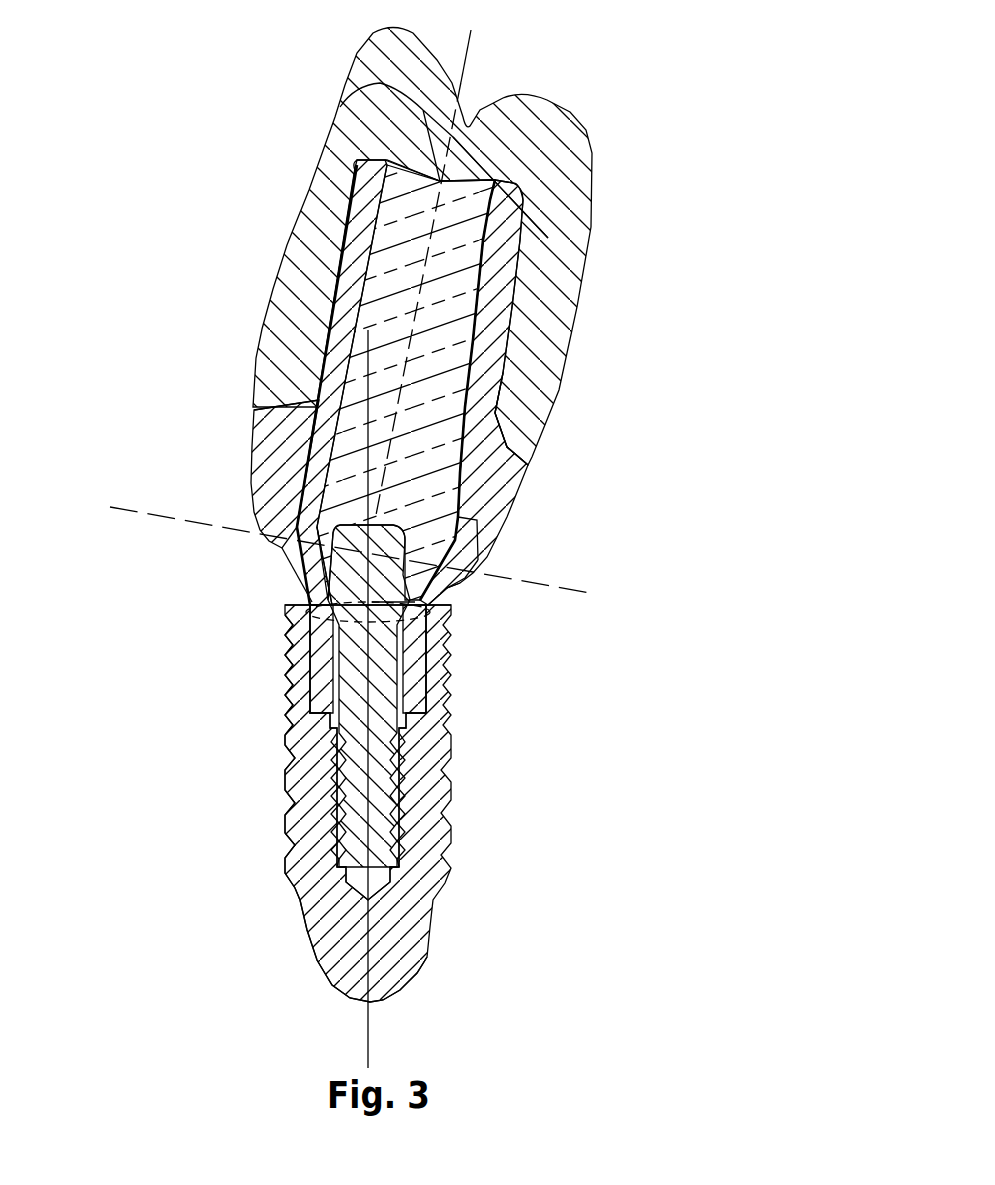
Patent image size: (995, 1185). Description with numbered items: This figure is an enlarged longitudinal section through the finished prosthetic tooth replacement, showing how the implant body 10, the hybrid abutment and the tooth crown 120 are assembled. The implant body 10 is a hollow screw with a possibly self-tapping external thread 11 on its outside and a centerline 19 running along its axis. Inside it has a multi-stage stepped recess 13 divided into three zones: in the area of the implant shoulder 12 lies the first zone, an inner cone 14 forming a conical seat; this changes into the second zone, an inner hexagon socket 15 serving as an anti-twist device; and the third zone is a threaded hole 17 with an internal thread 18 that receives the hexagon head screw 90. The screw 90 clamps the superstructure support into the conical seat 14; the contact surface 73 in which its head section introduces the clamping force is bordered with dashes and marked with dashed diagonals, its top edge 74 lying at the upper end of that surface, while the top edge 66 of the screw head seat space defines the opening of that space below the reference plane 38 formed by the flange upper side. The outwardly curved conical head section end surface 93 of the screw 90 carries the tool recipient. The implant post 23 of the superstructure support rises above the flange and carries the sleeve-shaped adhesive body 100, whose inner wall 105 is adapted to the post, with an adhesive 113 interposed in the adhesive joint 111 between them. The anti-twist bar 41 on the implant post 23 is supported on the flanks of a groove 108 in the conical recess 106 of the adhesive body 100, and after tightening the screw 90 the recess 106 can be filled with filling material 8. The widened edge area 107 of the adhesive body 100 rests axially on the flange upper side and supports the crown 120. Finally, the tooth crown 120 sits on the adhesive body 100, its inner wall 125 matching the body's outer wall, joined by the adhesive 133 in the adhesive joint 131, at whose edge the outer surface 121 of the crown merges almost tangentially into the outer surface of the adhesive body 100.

The tooth crown 120 is at (335, 98).
The outer surface 121 is at (322, 145).
The inner wall 125 is at (283, 207).
The adhesive body 100 is at (340, 303).
The adhesive joint 131 is at (310, 350).
The adhesive joint 111 is at (320, 408).
The edge area 107 is at (274, 451).
The reference plane 38 is at (336, 532).
The filling material 8 is at (433, 343).
The adhesive 133 is at (512, 302).
The inner wall 105 is at (482, 268).
The recess 106 is at (430, 415).
The adhesive 113 is at (462, 473).
The implant post 23 is at (447, 500).
The anti-twist bar 41 is at (460, 545).
The groove 108 is at (473, 553).
The top edge 74 is at (437, 588).
The hexagon head screw 90 is at (407, 720).
The contact surface 73 is at (405, 623).
The head section end surface 93 is at (323, 575).
The top edge 66 is at (327, 590).
The implant body 10 is at (457, 797).
The implant shoulder 12 is at (288, 607).
The recess 13 is at (318, 722).
The inner cone 14 is at (308, 620).
The inner hexagon socket 15 is at (312, 667).
The threaded hole 17 is at (330, 790).
The internal thread 18 is at (335, 843).
The external thread 11 is at (302, 907).
The centerline 19 is at (368, 917).